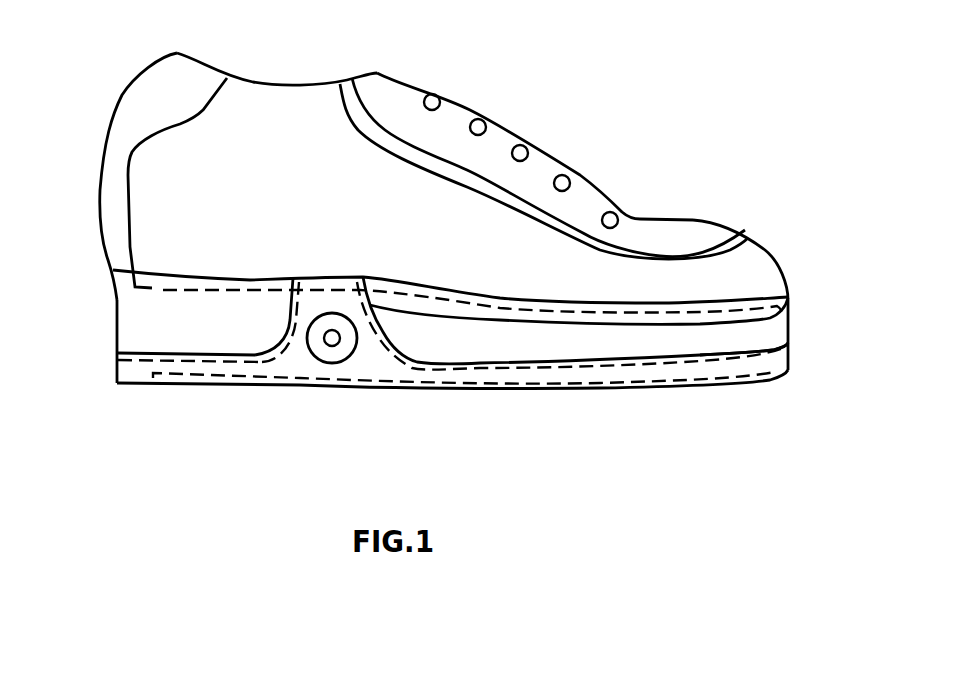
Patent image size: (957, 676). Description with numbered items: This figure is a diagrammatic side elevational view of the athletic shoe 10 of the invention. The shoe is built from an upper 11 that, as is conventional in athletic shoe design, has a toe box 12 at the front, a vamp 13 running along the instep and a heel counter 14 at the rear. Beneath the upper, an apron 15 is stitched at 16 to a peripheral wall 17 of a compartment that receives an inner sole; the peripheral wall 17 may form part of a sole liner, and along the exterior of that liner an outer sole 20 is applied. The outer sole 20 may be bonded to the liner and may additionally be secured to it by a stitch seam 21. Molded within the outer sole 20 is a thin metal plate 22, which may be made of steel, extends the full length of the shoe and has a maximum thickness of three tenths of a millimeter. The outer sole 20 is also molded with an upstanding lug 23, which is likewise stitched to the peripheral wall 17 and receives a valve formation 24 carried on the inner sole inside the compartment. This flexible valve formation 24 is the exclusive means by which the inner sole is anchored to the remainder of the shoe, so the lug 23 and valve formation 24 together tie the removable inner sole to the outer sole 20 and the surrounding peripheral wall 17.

The athletic shoe 10 is at (548, 116).
The upper 11 is at (733, 250).
The toe box 12 is at (743, 282).
The vamp 13 is at (690, 237).
The heel counter 14 is at (113, 230).
The apron 15 is at (137, 320).
The stitching 16 is at (163, 290).
The peripheral wall 17 is at (118, 340).
The outer sole 20 is at (767, 377).
The stitch seam 21 is at (787, 348).
The thin metal plate 22 is at (277, 383).
The upstanding lug 23 is at (407, 362).
The valve formation 24 is at (342, 350).